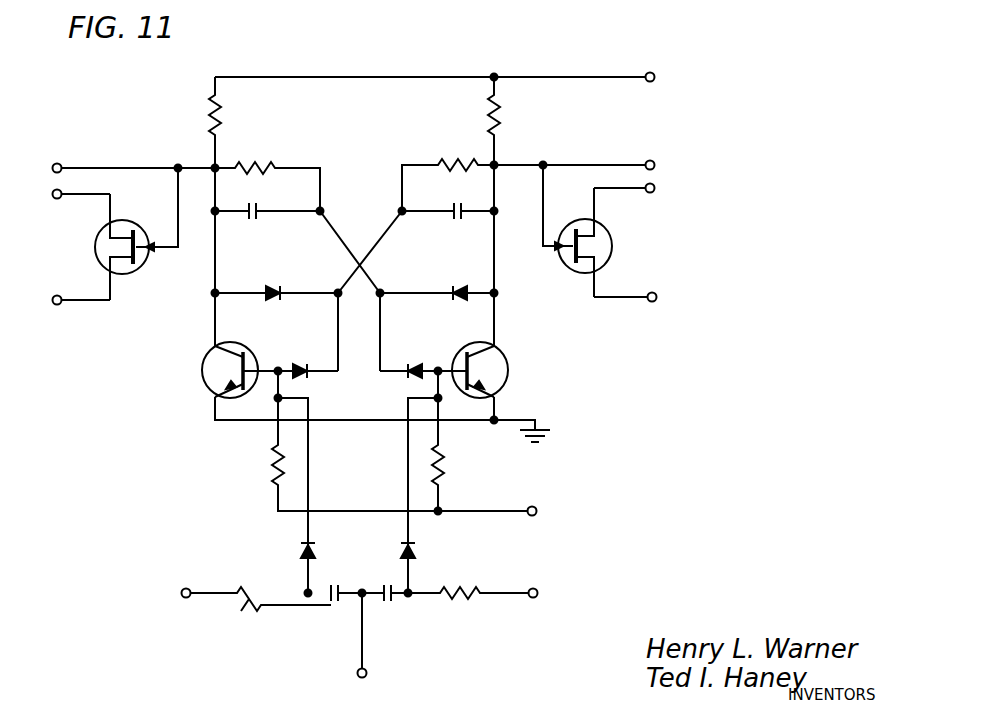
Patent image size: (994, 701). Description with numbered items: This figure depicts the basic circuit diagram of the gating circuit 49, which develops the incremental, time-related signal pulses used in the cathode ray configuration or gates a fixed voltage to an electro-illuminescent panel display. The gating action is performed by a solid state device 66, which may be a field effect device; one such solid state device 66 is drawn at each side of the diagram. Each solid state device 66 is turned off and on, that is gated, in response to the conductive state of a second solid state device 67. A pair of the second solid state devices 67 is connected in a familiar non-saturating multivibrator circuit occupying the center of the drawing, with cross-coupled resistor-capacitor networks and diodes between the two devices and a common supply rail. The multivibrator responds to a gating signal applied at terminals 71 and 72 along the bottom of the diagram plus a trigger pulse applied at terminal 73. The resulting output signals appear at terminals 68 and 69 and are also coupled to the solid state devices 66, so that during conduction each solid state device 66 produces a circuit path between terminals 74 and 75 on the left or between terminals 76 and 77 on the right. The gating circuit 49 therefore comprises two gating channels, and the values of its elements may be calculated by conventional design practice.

The gating circuit 49 is at (606, 52).
The solid state device 66 is at (95, 252).
The second solid state device 67 is at (202, 366).
The terminal 68 is at (78, 152).
The terminal 69 is at (591, 152).
The terminal 71 is at (208, 574).
The terminal 72 is at (560, 578).
The terminal 73 is at (367, 674).
The terminal 74 is at (54, 197).
The terminal 75 is at (54, 303).
The terminal 76 is at (655, 190).
The terminal 77 is at (657, 297).